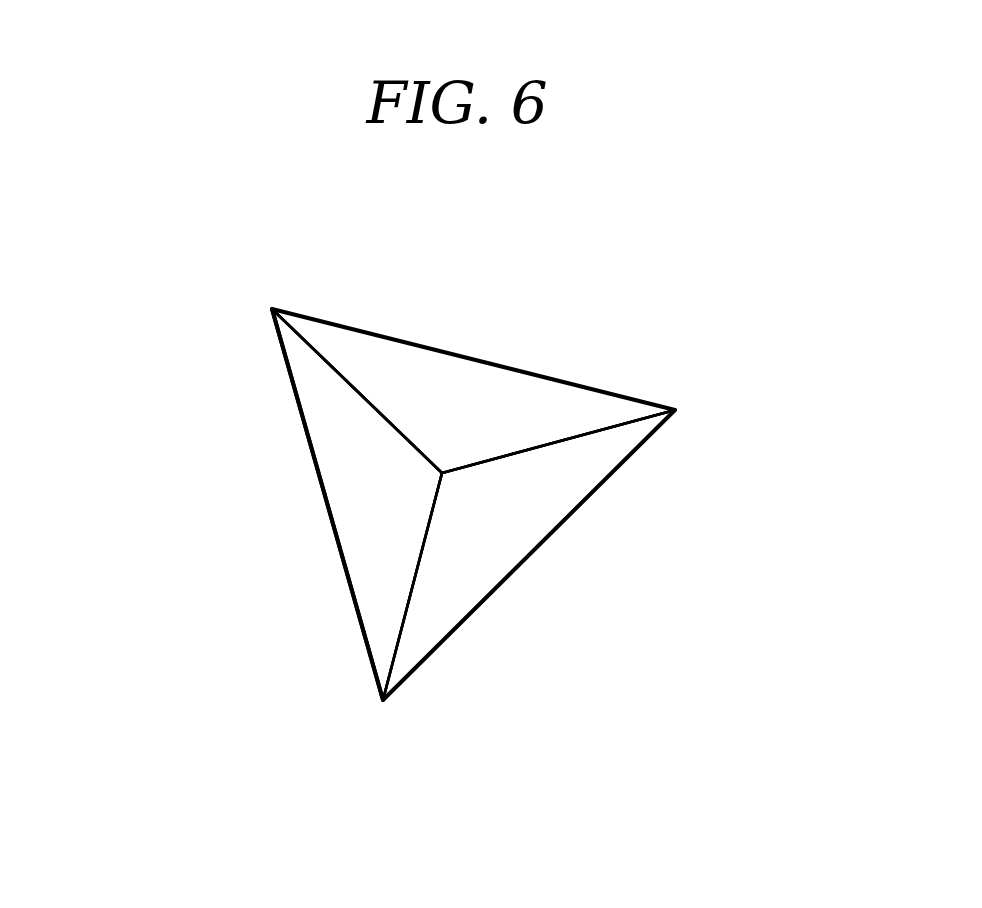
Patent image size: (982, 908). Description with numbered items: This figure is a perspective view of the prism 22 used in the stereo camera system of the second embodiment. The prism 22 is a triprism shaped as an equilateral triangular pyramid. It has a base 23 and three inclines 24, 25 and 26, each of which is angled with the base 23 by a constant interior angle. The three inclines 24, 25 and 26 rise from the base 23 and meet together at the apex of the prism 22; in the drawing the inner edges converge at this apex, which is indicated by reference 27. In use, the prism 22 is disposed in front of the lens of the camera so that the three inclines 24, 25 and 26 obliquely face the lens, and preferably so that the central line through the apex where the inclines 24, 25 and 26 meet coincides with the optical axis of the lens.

The prism 22 is at (457, 474).
The base 23 is at (327, 503).
The incline 24 is at (572, 403).
The incline 25 is at (535, 510).
The incline 26 is at (360, 540).
The apex (inner vertex) of tetrahedron 27 is at (443, 483).